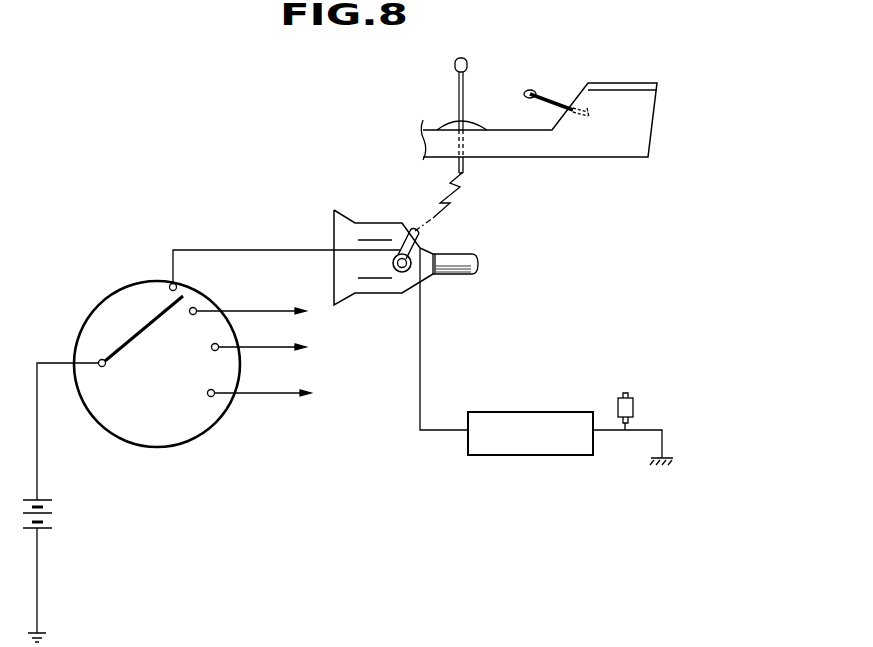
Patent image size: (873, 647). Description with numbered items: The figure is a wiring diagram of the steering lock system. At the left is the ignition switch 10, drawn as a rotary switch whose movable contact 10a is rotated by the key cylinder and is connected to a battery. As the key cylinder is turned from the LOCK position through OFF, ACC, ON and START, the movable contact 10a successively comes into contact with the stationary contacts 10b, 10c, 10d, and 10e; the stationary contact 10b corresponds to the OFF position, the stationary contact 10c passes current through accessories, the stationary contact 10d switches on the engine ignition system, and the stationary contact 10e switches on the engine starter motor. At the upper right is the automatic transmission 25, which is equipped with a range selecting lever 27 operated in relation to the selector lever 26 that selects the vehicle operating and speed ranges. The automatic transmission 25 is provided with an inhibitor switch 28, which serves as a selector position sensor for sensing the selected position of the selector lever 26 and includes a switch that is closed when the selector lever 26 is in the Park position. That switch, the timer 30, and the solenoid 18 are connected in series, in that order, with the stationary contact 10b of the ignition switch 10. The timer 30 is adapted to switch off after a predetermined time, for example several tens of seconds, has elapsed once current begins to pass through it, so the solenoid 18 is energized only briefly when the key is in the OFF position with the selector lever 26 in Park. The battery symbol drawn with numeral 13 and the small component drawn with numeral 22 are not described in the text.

The ignition switch 10 is at (78, 296).
The movable contact 10a is at (104, 358).
The stationary contact 10b is at (170, 291).
The stationary contact 10c is at (191, 315).
The stationary contact 10d is at (212, 351).
The stationary contact 10e is at (207, 393).
The battery 13 is at (55, 517).
The solenoid 18 is at (637, 412).
The switch 22 is at (625, 393).
The automatic transmission 25 is at (334, 228).
The selector lever 26 is at (457, 82).
The range selecting lever 27 is at (407, 232).
The inhibitor switch 28 is at (398, 250).
The timer 30 is at (515, 412).